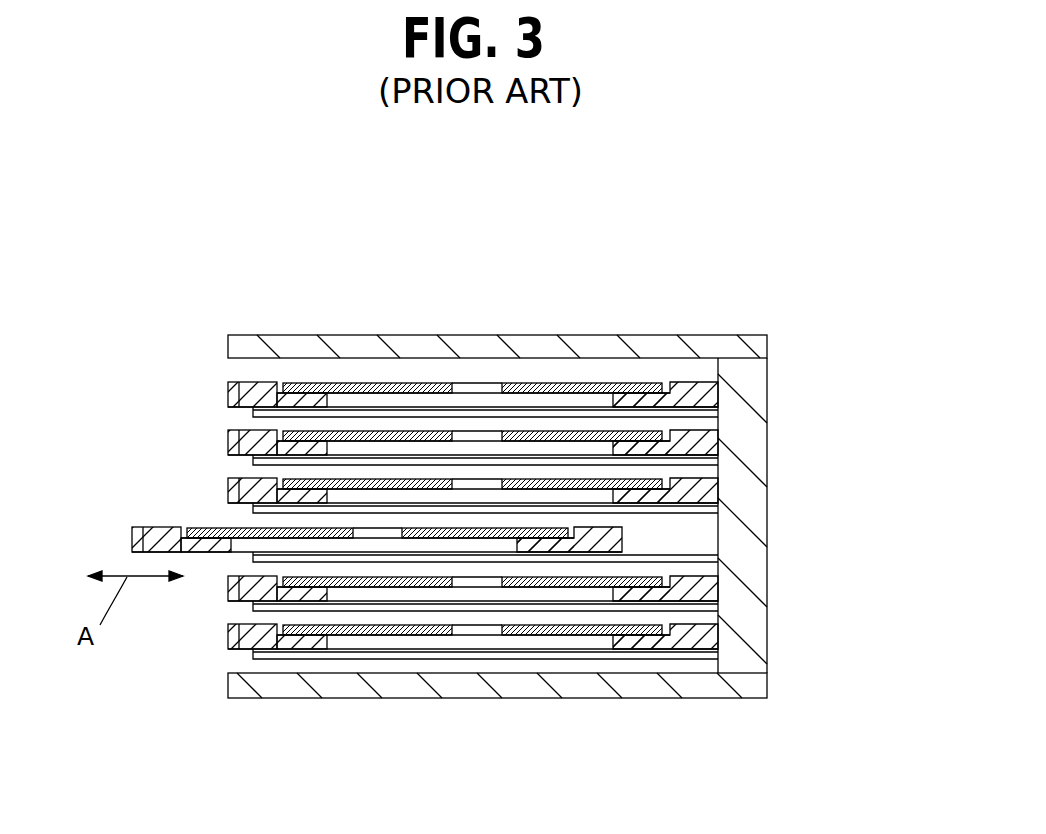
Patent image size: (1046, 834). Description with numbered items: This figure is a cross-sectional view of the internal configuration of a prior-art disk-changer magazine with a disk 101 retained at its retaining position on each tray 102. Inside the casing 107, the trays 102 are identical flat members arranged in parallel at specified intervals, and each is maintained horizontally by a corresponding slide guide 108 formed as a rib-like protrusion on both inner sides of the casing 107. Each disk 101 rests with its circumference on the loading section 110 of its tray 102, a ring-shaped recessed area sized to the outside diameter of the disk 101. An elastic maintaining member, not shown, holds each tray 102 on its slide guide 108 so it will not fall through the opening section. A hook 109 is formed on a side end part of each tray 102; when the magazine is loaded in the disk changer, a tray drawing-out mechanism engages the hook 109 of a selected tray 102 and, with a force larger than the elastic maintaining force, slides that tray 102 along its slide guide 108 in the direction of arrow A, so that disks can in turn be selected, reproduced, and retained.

The disk 101 is at (523, 385).
The tray 102 is at (708, 390).
The casing 107 is at (335, 343).
The slide guide 108 is at (716, 413).
The hook 109 is at (232, 390).
The loading section 110 is at (668, 398).